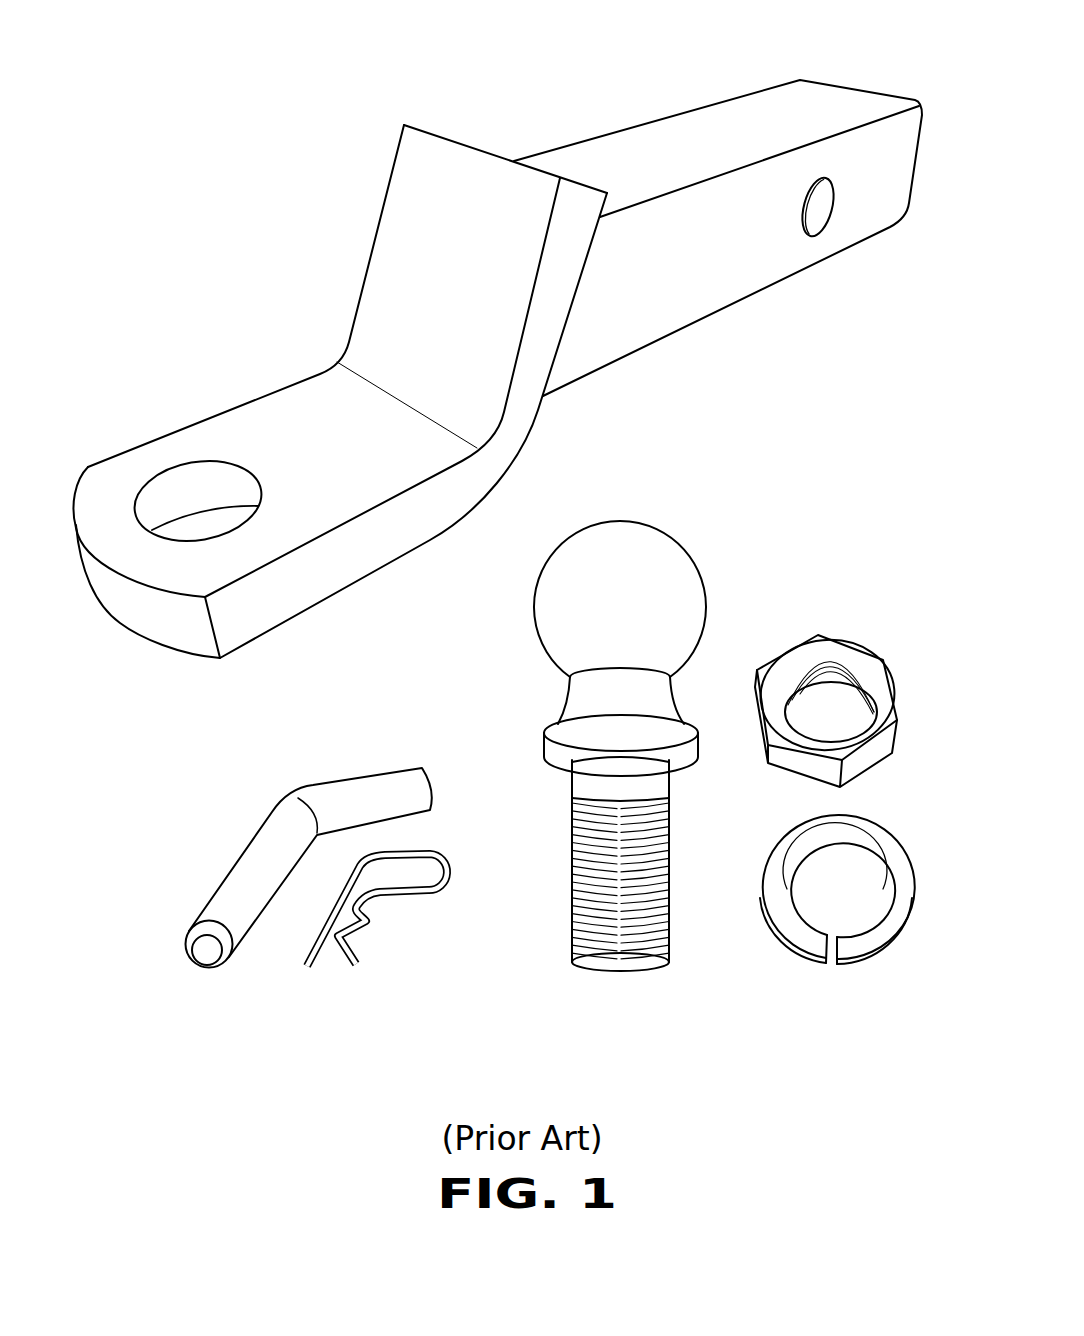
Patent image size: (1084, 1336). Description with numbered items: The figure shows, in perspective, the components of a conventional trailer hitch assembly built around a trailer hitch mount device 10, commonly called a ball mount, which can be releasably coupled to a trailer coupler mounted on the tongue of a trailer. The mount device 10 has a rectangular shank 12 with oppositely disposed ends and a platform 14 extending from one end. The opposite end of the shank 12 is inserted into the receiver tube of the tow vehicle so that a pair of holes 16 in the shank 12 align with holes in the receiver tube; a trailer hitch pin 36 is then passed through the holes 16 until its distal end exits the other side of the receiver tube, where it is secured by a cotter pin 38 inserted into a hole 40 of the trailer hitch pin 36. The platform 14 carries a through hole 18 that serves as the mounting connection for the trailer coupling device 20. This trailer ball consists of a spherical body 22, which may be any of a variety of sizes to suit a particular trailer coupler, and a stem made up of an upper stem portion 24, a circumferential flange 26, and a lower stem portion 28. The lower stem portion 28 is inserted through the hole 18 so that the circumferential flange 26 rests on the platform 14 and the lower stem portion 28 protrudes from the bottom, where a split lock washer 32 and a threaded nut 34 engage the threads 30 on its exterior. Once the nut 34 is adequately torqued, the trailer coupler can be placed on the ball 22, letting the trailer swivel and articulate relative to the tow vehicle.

The trailer hitch mount device 10 is at (382, 207).
The rectangular shank 12 is at (673, 128).
The platform 14 is at (327, 398).
The holes 16 is at (822, 223).
The through hole 18 is at (188, 490).
The trailer coupling device 20 is at (698, 572).
The spherical body 22 is at (618, 527).
The upper stem portion 24 is at (567, 702).
The circumferential flange 26 is at (540, 743).
The lower stem portion 28 is at (618, 963).
The threads 30 is at (572, 928).
The split lock washer 32 is at (802, 952).
The threaded nut 34 is at (837, 648).
The trailer hitch pin 36 is at (255, 838).
The cotter pin 38 is at (413, 888).
The hole 40 is at (245, 935).